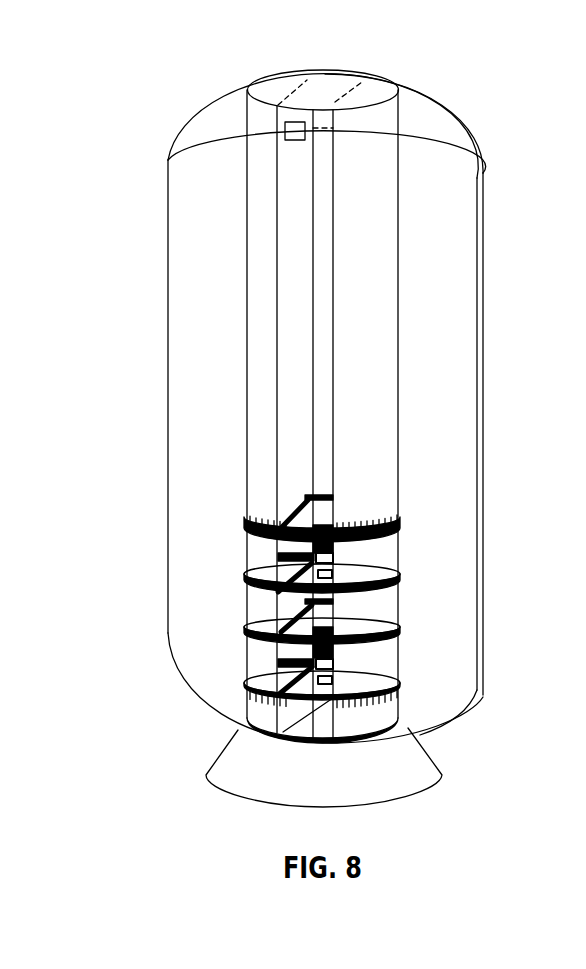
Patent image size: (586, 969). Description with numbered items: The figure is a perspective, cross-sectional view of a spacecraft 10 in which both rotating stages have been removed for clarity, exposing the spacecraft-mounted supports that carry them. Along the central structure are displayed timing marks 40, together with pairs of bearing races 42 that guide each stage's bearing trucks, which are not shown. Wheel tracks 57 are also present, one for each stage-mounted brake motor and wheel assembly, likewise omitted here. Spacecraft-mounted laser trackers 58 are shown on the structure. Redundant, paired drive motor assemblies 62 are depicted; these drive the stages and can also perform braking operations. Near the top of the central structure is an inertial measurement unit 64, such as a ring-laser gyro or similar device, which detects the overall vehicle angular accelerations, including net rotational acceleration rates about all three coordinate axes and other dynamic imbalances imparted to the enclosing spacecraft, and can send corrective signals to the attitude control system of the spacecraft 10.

The spacecraft 10 is at (129, 58).
The timing marks 40 is at (398, 517).
The bearing races 42 is at (400, 577).
The wheel tracks 57 is at (272, 560).
The laser trackers 58 is at (282, 593).
The drive motor assemblies 62 is at (297, 528).
The inertial measurement unit 64 is at (287, 128).